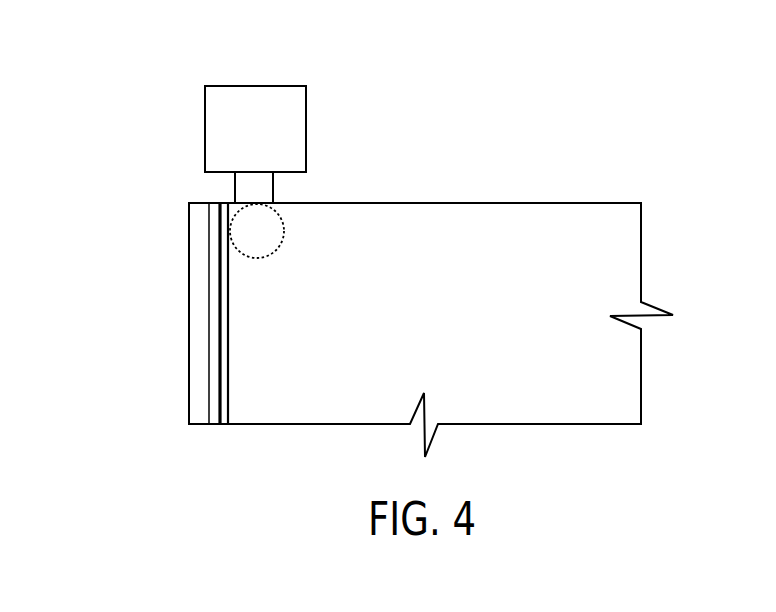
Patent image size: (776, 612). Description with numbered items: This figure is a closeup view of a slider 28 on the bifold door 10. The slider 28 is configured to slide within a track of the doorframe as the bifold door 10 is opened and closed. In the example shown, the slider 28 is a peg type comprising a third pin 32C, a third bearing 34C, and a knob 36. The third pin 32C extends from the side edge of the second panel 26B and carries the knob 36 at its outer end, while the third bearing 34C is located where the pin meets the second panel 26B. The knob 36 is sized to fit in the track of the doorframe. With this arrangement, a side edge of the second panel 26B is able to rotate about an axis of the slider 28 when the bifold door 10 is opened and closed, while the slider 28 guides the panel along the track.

The bifold door 10 is at (678, 173).
The second panel 26B is at (422, 203).
The slider 28 is at (128, 124).
The third pin 32C is at (275, 193).
The third bearing 34C is at (280, 247).
The knob 36 is at (205, 117).